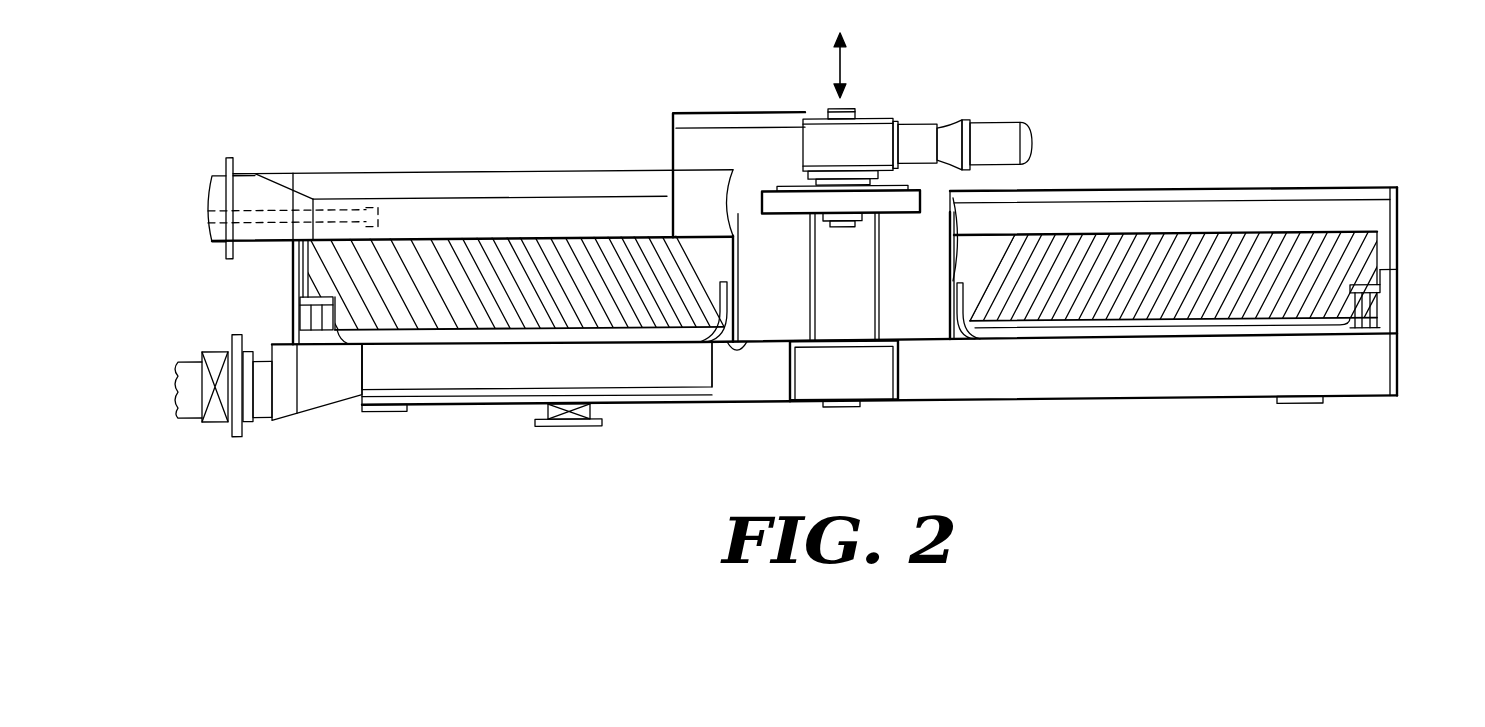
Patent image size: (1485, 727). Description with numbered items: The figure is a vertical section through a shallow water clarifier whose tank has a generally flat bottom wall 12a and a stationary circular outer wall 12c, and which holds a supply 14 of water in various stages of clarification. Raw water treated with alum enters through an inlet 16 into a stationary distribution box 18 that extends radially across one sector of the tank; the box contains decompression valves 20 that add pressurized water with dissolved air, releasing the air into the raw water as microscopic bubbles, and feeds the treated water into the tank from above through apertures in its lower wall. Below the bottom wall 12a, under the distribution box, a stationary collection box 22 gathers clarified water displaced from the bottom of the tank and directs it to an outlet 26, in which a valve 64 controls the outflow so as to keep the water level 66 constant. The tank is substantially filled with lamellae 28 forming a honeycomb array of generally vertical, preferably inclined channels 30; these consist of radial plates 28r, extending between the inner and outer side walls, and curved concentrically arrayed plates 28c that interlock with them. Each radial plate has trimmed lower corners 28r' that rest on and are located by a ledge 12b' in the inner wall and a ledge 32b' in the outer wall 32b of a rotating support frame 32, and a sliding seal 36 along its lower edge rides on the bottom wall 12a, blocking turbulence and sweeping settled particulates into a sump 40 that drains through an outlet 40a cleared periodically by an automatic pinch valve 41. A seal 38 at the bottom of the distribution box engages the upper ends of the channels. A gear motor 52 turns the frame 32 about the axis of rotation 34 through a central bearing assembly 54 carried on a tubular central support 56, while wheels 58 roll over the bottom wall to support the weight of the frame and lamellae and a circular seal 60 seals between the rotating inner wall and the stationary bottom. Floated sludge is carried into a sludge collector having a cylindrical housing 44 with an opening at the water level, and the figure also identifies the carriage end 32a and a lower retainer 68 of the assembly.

The bottom wall 12a is at (1075, 339).
The ledge 12b' is at (921, 276).
The outer wall 12c is at (1398, 214).
The supply of water 14 is at (1298, 218).
The inlet 16 is at (213, 172).
The distribution box 18 is at (527, 196).
The decompression valve 20 is at (366, 196).
The collection box 22 is at (645, 378).
The outlet 26 is at (265, 405).
The lamellae 28 is at (302, 273).
The curved plates 28c is at (528, 318).
The radial plates 28r is at (275, 308).
The trimmed lower corner 28r' is at (925, 240).
The channels 30 is at (615, 320).
The support frame 32 is at (1003, 187).
The carriage end 32a is at (957, 221).
The outer wall of support assembly 32b is at (1423, 266).
The ledge 32b' is at (1411, 306).
The axis of rotation 34 is at (845, 68).
The sliding seal 36 is at (396, 337).
The sliding seal 38 is at (617, 237).
The sump 40 is at (536, 397).
The outlet 40a is at (574, 427).
The automatic pinch valve 41 is at (541, 418).
The cylindrical housing 44 is at (438, 170).
The gear motor 52 is at (1003, 130).
The central bearing assembly 54 is at (797, 182).
The tubular central support 56 is at (880, 259).
The wheels 58 is at (1370, 334).
The circular seal 60 is at (745, 341).
The valve 64 is at (212, 414).
The water level 66 is at (1253, 192).
The lower retainer 68 is at (952, 336).